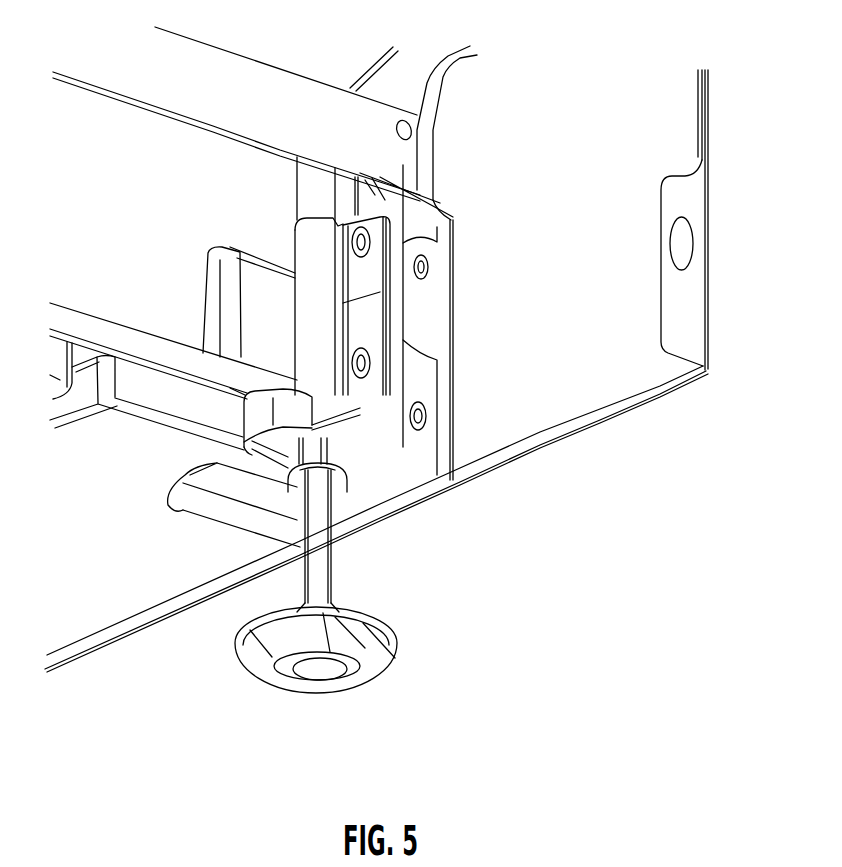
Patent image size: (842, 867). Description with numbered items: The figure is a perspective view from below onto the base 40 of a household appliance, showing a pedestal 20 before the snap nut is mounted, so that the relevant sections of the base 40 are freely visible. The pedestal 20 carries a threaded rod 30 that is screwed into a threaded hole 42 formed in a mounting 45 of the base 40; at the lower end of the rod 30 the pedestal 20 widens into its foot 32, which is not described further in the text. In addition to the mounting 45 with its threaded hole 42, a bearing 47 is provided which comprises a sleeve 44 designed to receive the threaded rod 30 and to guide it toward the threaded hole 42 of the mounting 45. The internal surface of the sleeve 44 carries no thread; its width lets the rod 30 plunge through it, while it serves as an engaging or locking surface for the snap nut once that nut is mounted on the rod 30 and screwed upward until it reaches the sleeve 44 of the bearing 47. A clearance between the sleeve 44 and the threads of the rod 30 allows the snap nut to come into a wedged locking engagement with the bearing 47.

The pedestal 20 is at (380, 554).
The threaded rod 30 is at (313, 563).
The foot base 32 is at (370, 643).
The base 40 is at (117, 658).
The threaded hole 42 is at (313, 269).
The sleeve 44 is at (50, 458).
The mounting 45 is at (318, 332).
The bearing 47 is at (330, 414).